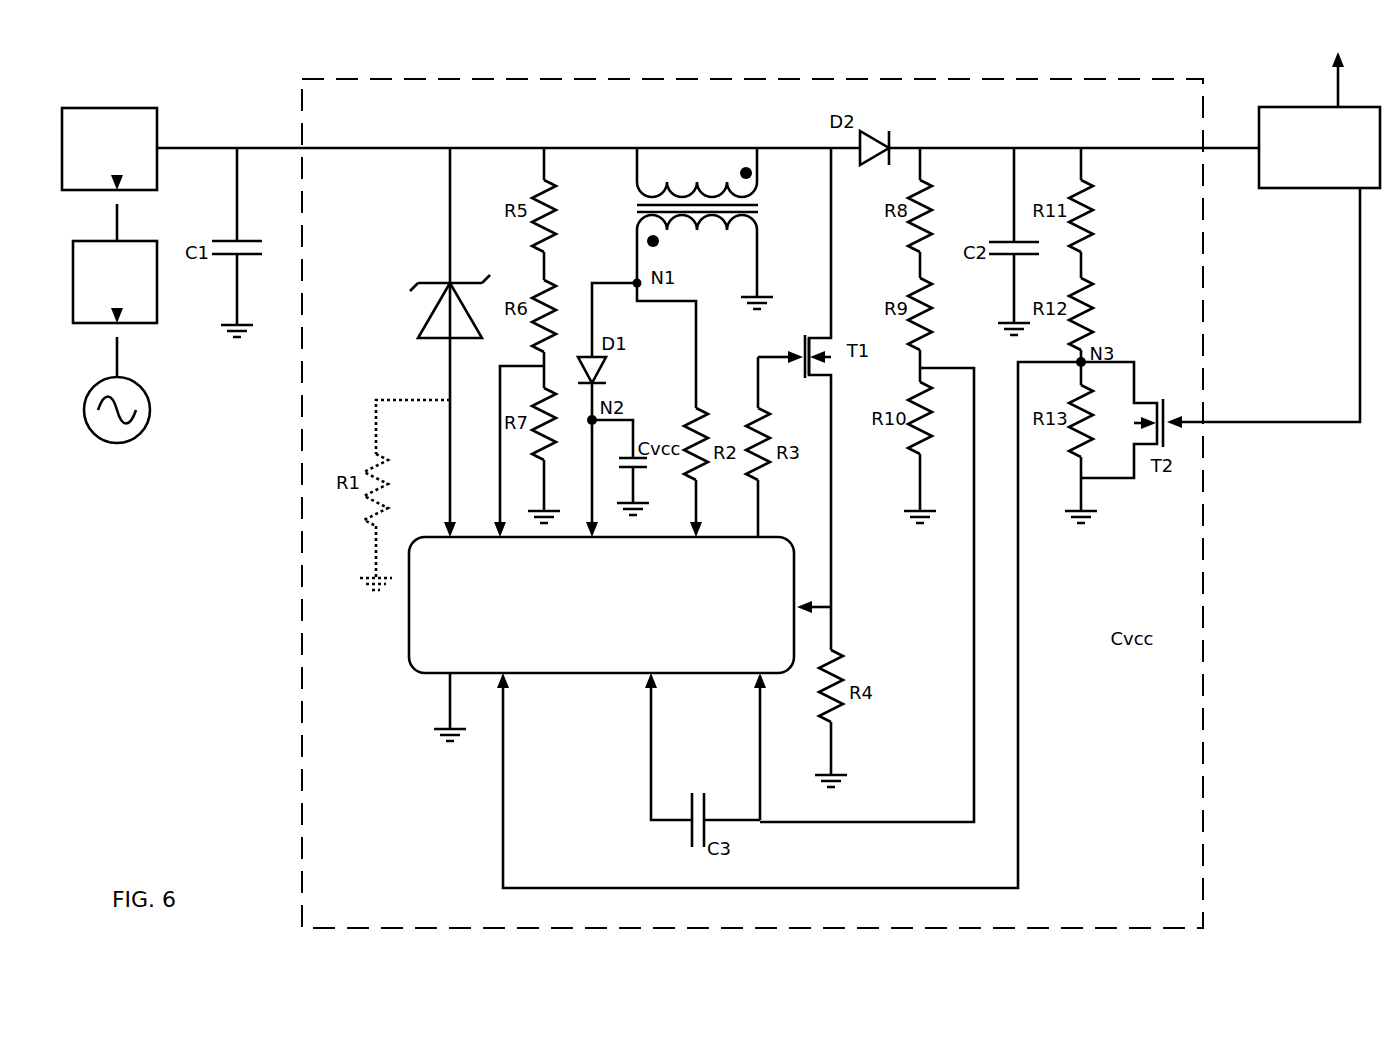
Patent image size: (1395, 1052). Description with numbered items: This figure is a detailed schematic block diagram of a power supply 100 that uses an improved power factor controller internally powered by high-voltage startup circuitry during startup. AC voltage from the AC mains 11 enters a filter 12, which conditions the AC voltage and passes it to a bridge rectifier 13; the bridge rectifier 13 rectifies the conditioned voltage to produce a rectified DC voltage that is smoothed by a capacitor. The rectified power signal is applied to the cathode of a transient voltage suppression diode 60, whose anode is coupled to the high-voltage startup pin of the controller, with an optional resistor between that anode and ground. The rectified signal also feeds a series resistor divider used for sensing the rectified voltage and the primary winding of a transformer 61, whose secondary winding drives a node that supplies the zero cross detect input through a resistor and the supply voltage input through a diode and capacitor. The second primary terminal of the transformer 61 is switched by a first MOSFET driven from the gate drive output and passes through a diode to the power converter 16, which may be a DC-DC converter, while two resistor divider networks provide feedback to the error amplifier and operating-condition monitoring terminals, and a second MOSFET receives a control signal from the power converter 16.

The power supply 100 is at (150, 36).
The AC mains 11 is at (92, 440).
The filter 12 is at (97, 325).
The bridge rectifier 13 is at (94, 192).
The power converter 16 is at (1345, 191).
The transient voltage suppression diode 60 is at (439, 340).
The transformer 61 is at (760, 166).